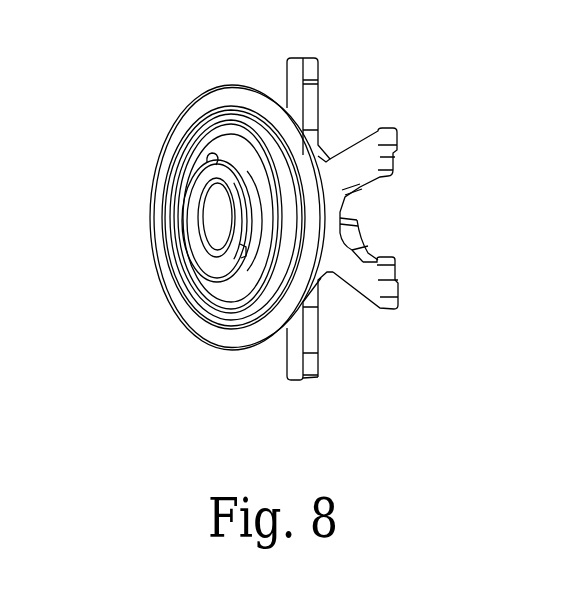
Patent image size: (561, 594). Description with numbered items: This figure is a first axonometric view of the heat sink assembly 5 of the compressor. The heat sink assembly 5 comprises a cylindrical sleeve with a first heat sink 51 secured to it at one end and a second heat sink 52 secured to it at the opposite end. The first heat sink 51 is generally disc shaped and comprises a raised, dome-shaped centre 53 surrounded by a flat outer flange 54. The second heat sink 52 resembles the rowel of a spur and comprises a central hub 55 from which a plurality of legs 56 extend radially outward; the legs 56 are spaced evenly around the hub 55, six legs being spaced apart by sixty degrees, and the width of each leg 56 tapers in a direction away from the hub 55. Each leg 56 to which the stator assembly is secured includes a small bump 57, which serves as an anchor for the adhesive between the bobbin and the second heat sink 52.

The heat sink assembly 5 is at (97, 113).
The first heat sink 51 is at (233, 85).
The second heat sink 52 is at (318, 70).
The dome-shaped centre 53 is at (185, 275).
The outer flange 54 is at (208, 335).
The central hub 55 is at (333, 213).
The legs 56 is at (313, 363).
The bump 57 is at (397, 258).